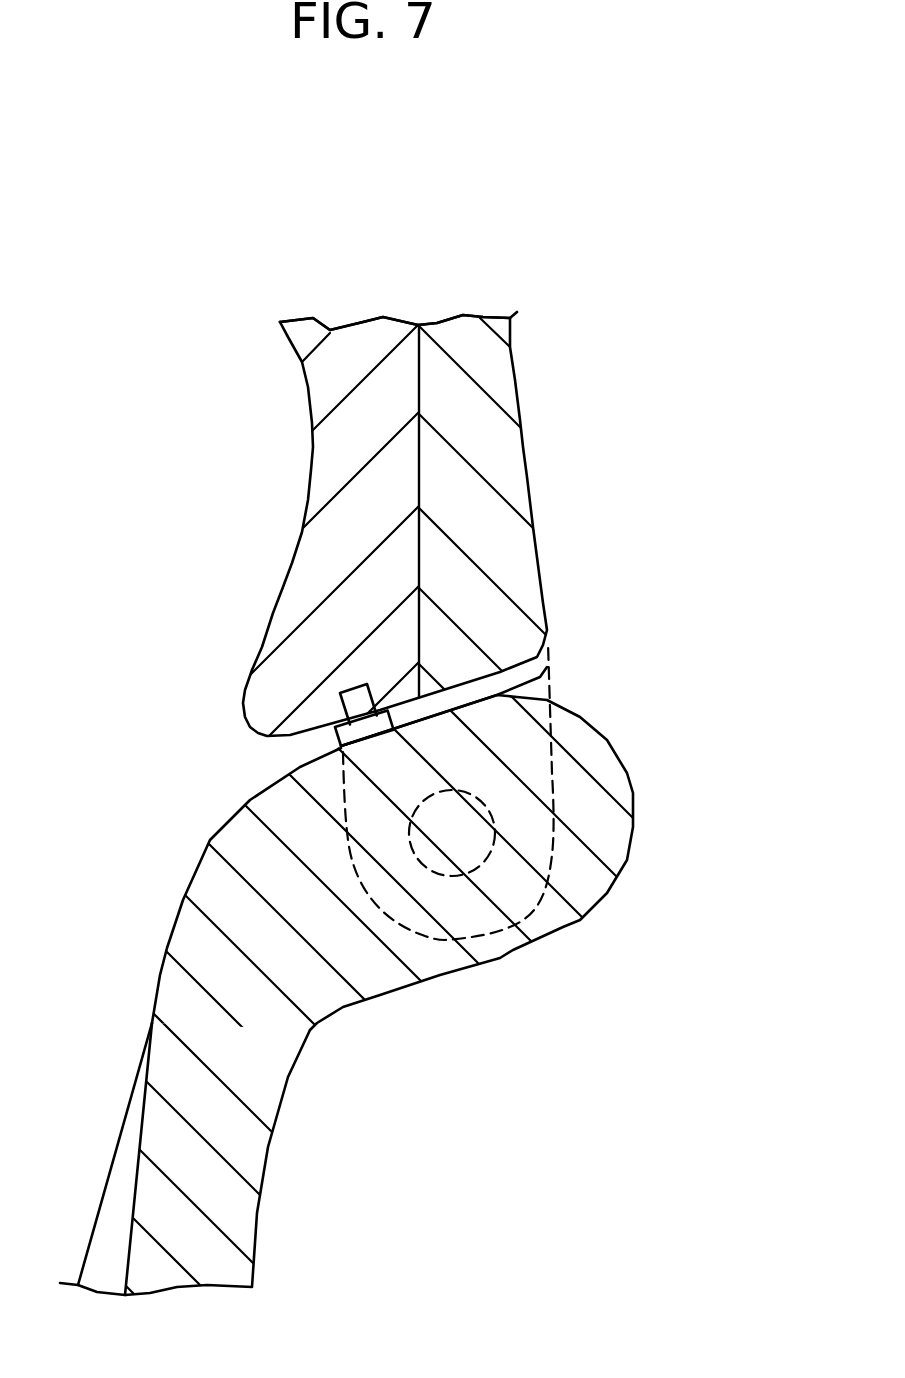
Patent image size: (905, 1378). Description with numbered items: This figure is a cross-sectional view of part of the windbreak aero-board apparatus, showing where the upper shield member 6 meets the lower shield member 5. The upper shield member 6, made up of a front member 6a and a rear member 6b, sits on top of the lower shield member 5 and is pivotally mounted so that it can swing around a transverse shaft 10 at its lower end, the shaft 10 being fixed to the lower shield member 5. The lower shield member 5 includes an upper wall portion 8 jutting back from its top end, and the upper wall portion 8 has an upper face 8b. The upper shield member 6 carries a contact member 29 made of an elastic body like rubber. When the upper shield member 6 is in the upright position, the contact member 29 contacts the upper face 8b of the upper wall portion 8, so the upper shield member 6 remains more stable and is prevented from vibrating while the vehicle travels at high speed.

The lower shield member 5 is at (167, 950).
The upper shield member 6 is at (527, 460).
The front member 6a is at (333, 333).
The rear member 6b is at (480, 317).
The upper wall portion 8 is at (607, 770).
The upper face 8b is at (547, 667).
The shaft 10 is at (455, 845).
The contact member 29 is at (338, 737).